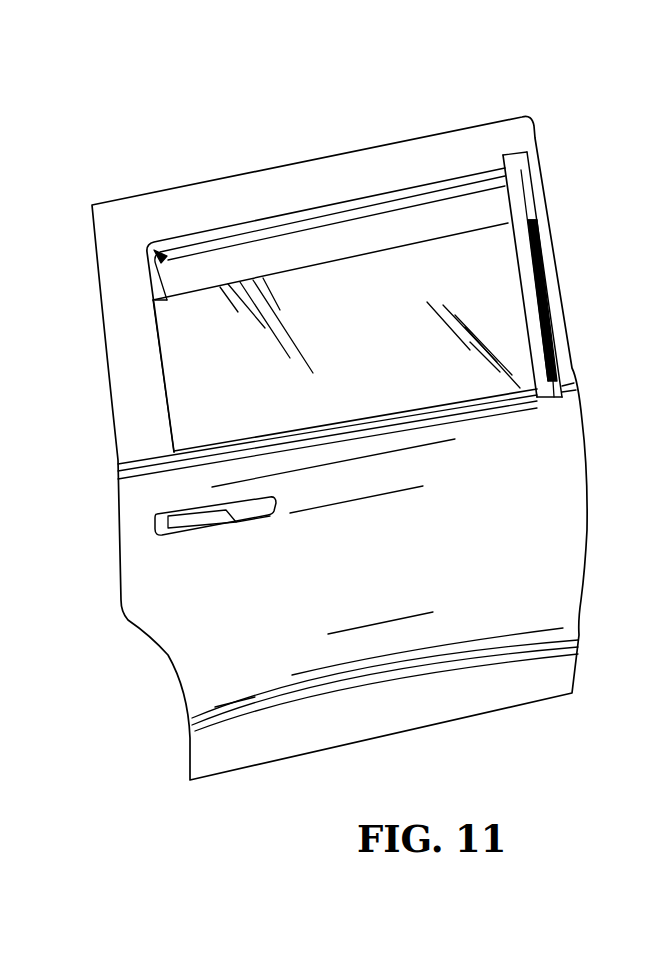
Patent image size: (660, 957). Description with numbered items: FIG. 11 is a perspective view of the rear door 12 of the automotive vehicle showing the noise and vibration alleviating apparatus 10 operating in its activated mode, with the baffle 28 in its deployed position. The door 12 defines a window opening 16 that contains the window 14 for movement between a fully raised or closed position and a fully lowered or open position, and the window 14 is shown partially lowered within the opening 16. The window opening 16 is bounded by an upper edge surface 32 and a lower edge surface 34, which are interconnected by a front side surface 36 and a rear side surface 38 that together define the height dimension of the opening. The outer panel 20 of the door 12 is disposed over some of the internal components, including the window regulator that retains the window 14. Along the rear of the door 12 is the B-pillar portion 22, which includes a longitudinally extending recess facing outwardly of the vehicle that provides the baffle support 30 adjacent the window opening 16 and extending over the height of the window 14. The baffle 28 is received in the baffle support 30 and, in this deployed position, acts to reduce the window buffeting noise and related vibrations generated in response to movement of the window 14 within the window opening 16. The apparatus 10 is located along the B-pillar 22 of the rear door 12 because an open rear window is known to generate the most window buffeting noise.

The noise and vibration alleviating apparatus 10 is at (540, 237).
The door 12 is at (588, 530).
The window 14 is at (237, 350).
The window opening 16 is at (509, 188).
The outer panel 20 is at (178, 629).
The B-pillar portion 22 is at (563, 369).
The baffle 28 is at (552, 328).
The baffle support 30 is at (553, 397).
The upper edge surface 32 is at (310, 222).
The lower edge surface 34 is at (382, 410).
The front side surface 36 is at (533, 272).
The rear side surface 38 is at (165, 398).